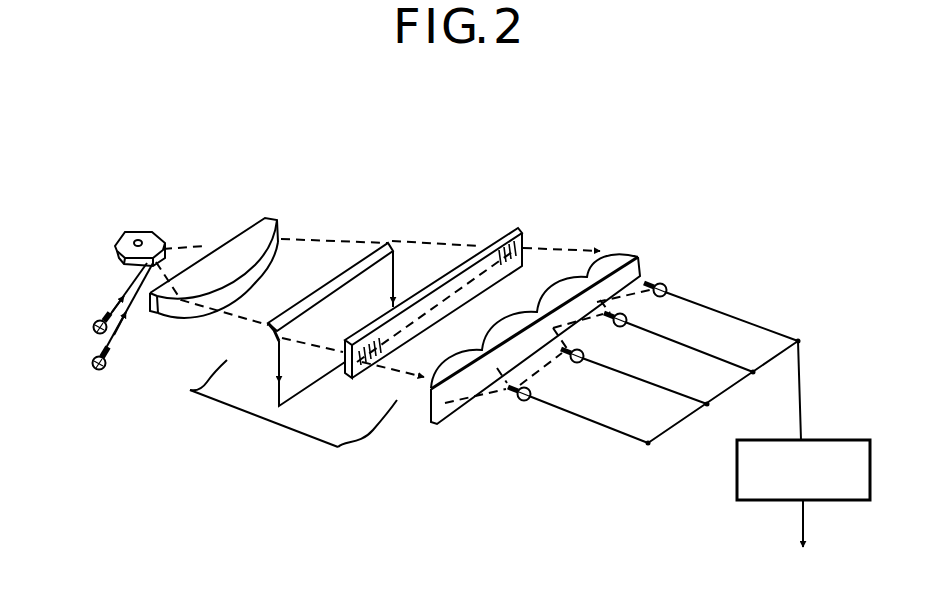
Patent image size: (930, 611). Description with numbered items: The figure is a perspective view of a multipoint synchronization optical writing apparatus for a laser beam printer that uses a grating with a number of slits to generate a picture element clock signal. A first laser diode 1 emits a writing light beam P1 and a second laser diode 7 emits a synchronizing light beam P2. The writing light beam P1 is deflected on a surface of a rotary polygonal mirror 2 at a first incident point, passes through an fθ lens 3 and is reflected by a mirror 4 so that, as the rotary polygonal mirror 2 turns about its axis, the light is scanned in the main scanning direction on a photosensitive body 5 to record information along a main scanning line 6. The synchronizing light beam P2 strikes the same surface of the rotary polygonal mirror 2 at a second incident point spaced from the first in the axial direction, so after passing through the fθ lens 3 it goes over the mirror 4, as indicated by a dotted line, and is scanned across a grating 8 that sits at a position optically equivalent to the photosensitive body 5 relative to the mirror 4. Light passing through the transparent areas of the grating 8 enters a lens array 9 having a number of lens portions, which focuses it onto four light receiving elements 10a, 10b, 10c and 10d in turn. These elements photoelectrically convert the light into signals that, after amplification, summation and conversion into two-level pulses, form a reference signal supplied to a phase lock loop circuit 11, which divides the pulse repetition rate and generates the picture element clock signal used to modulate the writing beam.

The first laser diode 1 is at (94, 334).
The rotary polygonal mirror 2 is at (150, 230).
The fθ lens 3 is at (262, 230).
The mirror 4 is at (382, 258).
The photosensitive body 5 is at (330, 430).
The main scanning line 6 is at (298, 397).
The second laser diode 7 is at (102, 370).
The grating 8 is at (517, 232).
The lens array 9 is at (610, 265).
The light receiving element 10a is at (512, 403).
The light receiving element 10b is at (576, 364).
The light receiving element 10c is at (628, 322).
The light receiving element 10d is at (667, 284).
The phase lock loop circuit 11 is at (737, 481).
The writing light beam P1 is at (112, 305).
The synchronizing light beam P2 is at (121, 326).